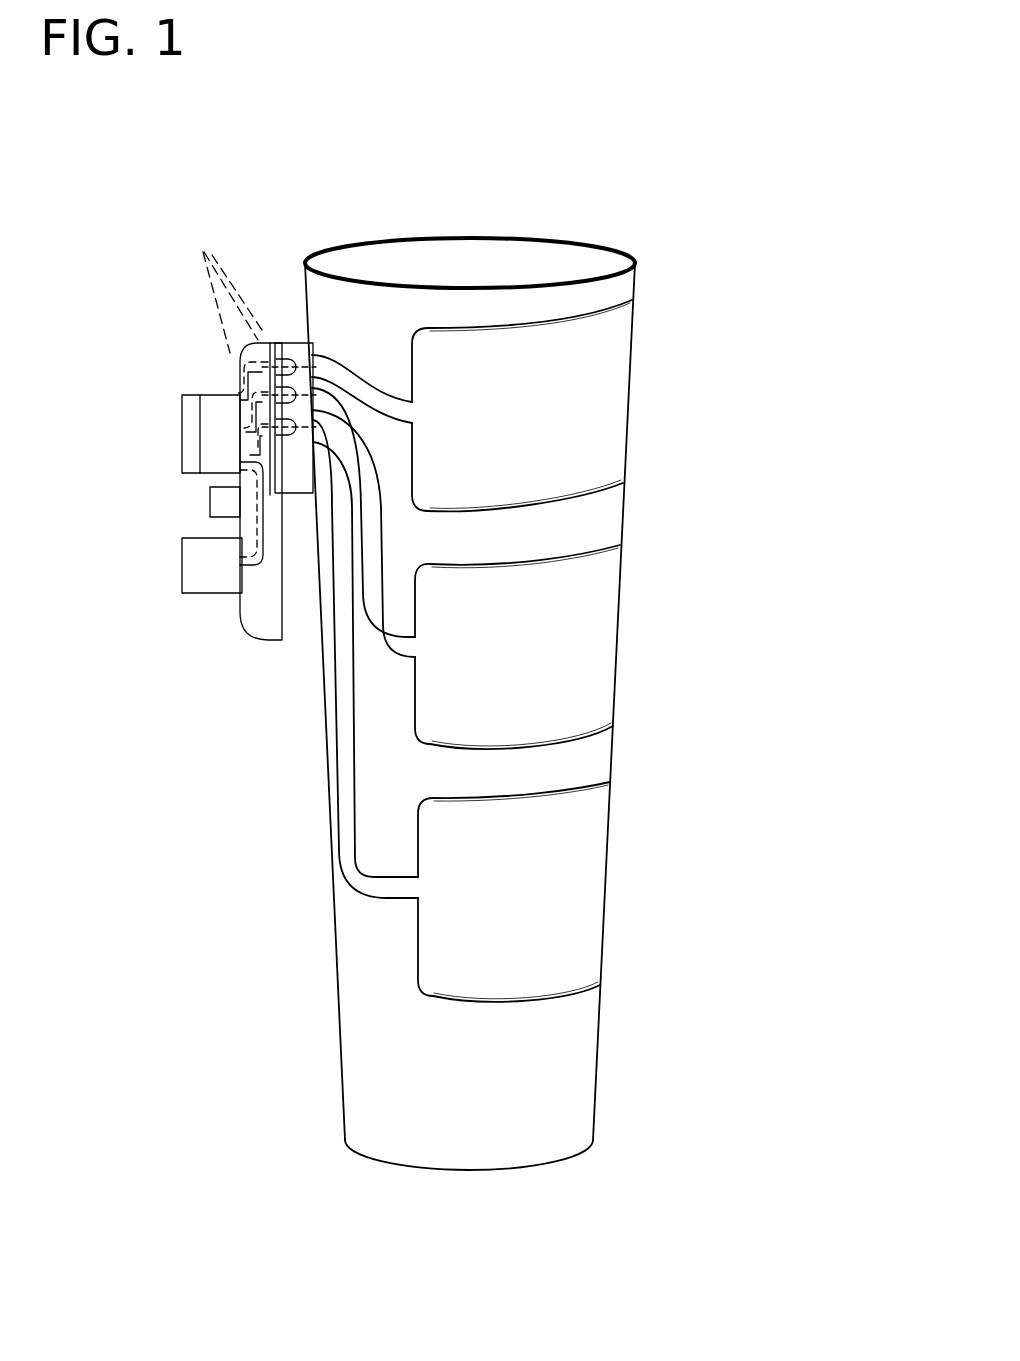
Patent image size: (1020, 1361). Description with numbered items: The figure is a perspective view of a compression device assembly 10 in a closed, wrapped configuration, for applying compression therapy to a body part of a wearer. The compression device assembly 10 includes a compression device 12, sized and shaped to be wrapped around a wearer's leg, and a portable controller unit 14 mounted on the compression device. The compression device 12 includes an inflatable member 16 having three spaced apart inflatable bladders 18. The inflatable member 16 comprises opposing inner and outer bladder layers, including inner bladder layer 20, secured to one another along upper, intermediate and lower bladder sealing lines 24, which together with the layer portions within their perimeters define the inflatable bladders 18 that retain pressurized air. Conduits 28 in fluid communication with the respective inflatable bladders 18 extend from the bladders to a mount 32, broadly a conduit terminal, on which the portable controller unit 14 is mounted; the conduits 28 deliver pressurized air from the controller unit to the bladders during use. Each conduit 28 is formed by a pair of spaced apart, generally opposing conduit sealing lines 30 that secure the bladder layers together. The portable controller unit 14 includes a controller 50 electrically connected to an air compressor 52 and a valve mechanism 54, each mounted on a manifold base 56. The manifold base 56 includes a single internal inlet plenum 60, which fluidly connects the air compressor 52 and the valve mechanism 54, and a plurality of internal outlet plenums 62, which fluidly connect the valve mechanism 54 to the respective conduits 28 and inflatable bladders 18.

The compression device assembly 10 is at (611, 210).
The compression device 12 is at (638, 273).
The portable controller unit 14 is at (210, 625).
The inflatable member 16 is at (357, 1050).
The inflatable bladders 18 is at (590, 453).
The inner bladder layer 20 is at (537, 1148).
The bladder sealing lines 24 is at (593, 495).
The conduits 28 is at (383, 403).
The conduit sealing lines 30 is at (348, 380).
The mount 32 is at (297, 343).
The controller 50 is at (210, 498).
The air compressor 52 is at (185, 568).
The valve mechanism 54 is at (185, 435).
The manifold base 56 is at (270, 645).
The inlet plenum 60 is at (240, 535).
The outlet plenums 62 is at (198, 233).